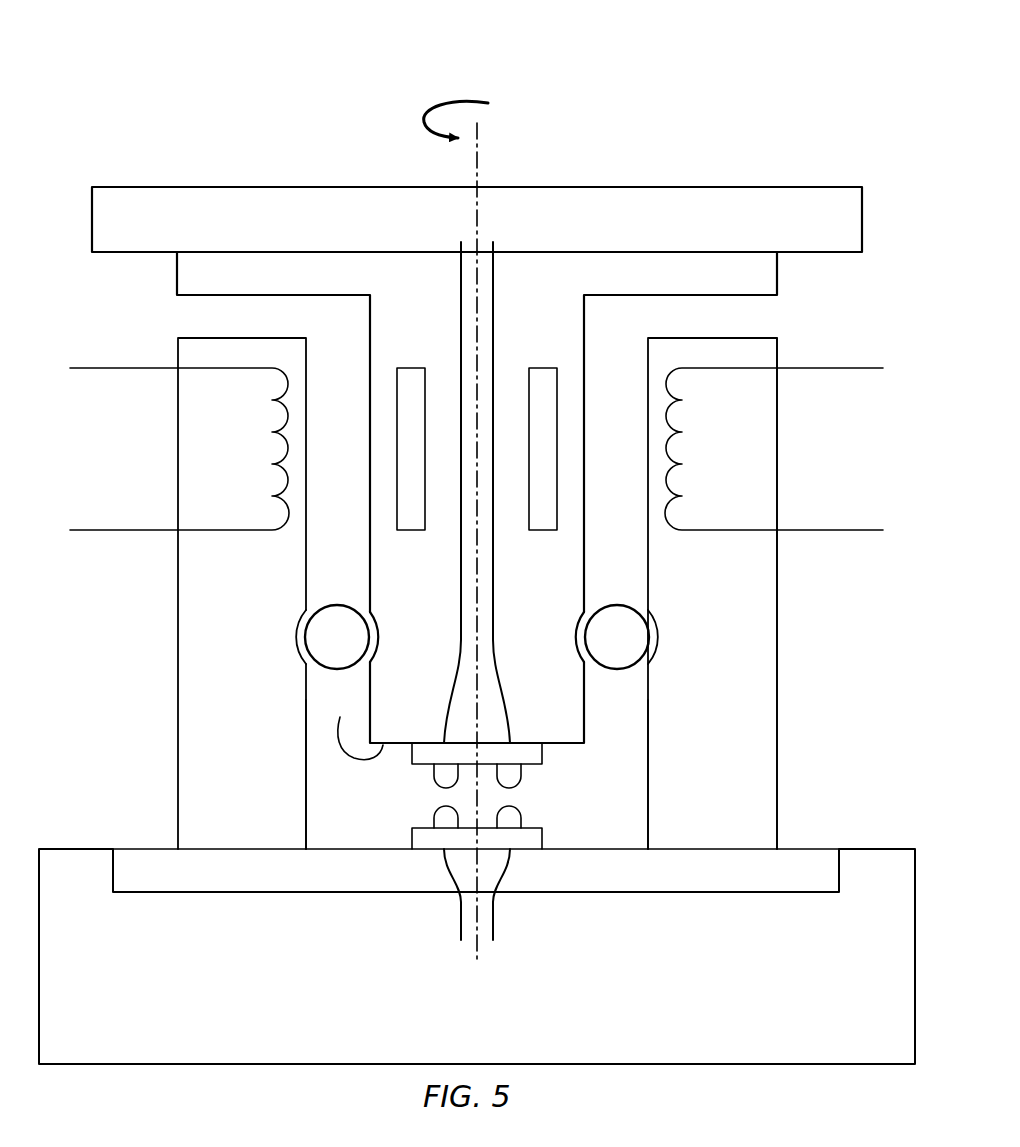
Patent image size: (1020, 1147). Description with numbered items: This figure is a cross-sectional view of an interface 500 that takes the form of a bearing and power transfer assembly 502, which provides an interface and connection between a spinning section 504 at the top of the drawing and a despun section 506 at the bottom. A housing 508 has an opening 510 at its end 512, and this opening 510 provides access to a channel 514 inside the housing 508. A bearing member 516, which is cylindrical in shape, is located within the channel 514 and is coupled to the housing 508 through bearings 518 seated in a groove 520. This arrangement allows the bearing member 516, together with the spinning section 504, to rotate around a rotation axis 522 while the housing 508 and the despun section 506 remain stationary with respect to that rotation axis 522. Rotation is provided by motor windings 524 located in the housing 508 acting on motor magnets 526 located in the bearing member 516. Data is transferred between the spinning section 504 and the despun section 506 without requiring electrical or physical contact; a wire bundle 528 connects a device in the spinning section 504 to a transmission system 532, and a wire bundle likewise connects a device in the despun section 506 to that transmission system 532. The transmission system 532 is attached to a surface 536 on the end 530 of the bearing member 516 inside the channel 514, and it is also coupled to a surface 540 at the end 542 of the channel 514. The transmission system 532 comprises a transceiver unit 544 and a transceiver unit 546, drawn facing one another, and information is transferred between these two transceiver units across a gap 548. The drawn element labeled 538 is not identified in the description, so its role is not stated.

The interface 500 is at (579, 72).
The bearing and power transfer assembly 502 is at (121, 298).
The spinning section 504 is at (379, 187).
The despun section 506 is at (496, 1017).
The housing 508 is at (778, 718).
The opening 510 is at (633, 335).
The end 512 is at (760, 340).
The channel 514 is at (333, 773).
The bearing member 516 is at (333, 574).
The bearings 518 is at (330, 635).
The groove 520 is at (297, 648).
The rotation axis 522 is at (446, 105).
The motor windings 524 is at (284, 449).
The motor magnets 526 is at (411, 532).
The wire bundle 528 is at (495, 318).
The end 530 is at (418, 892).
The transmission system 532 is at (544, 808).
The surface 536 is at (353, 724).
The gap 538 is at (563, 746).
The surface 540 is at (350, 849).
The end 542 is at (590, 849).
The transceiver unit 544 is at (526, 742).
The transceiver unit 546 is at (525, 849).
The gap 548 is at (404, 762).